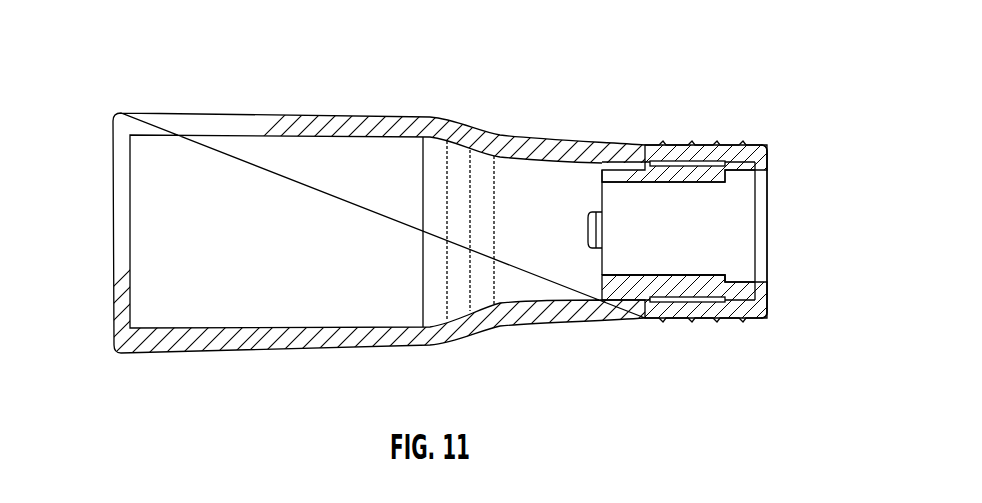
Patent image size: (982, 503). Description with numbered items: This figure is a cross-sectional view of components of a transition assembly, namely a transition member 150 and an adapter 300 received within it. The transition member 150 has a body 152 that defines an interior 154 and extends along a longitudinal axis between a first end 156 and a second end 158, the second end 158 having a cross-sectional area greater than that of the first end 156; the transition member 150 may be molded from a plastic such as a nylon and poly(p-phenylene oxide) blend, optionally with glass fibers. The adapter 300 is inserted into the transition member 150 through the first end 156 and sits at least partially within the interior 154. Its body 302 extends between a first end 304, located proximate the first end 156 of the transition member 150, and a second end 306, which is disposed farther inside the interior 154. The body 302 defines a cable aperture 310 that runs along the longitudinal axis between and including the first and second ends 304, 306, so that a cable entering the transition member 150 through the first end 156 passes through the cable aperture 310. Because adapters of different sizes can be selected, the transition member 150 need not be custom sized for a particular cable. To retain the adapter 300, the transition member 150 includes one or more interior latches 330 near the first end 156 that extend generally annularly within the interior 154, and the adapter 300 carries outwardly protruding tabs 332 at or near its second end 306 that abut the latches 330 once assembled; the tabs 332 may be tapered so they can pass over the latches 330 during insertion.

The transition member 150 is at (357, 60).
The body 152 is at (482, 127).
The interior 154 is at (358, 231).
The first end 156 is at (785, 146).
The second end 158 is at (95, 198).
The adapter 300 is at (722, 320).
The body 302 is at (702, 262).
The first end 304 is at (781, 195).
The second end 306 is at (588, 238).
The cable aperture 310 is at (734, 238).
The interior latch 330 is at (640, 155).
The tab 332 is at (605, 150).